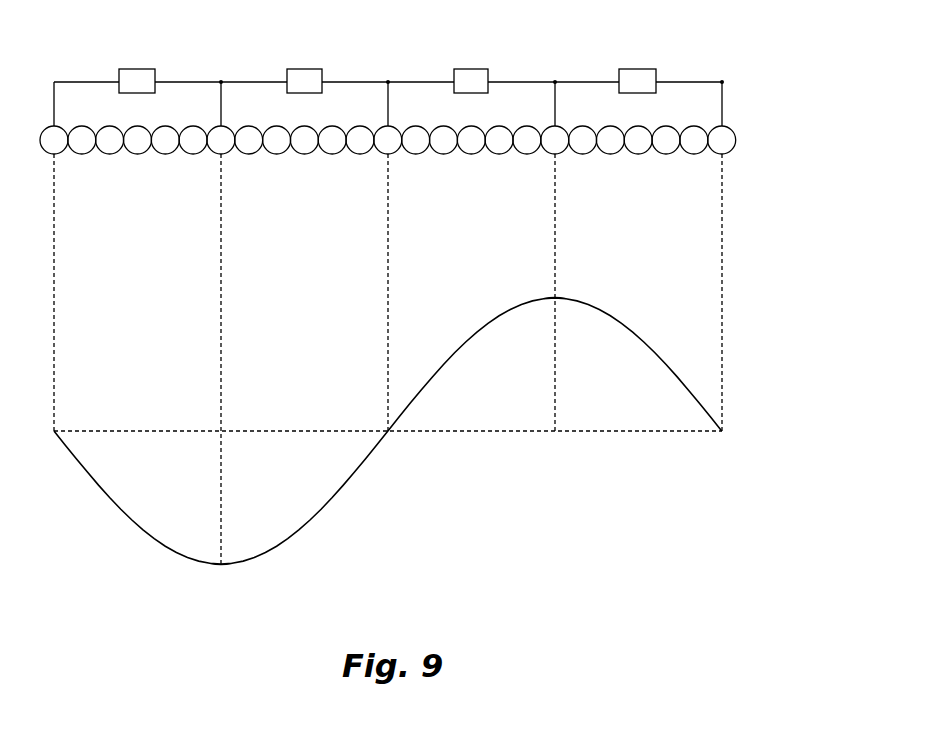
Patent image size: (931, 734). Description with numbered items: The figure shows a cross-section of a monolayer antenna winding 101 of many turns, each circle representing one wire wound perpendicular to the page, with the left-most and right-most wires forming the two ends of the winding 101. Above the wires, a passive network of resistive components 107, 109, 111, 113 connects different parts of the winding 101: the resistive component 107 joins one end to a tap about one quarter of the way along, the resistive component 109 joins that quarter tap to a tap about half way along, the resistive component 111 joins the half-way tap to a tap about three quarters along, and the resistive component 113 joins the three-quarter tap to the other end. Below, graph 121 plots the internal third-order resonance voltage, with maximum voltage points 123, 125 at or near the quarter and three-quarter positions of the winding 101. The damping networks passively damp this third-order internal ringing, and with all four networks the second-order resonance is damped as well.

The monolayer winding 101 is at (741, 138).
The resistive component 107 is at (140, 70).
The resistive component 109 is at (307, 70).
The resistive component 111 is at (474, 70).
The resistive component 113 is at (640, 70).
The graph 121 is at (697, 396).
The maximum voltage point 123 is at (555, 298).
The maximum voltage point 125 is at (221, 566).